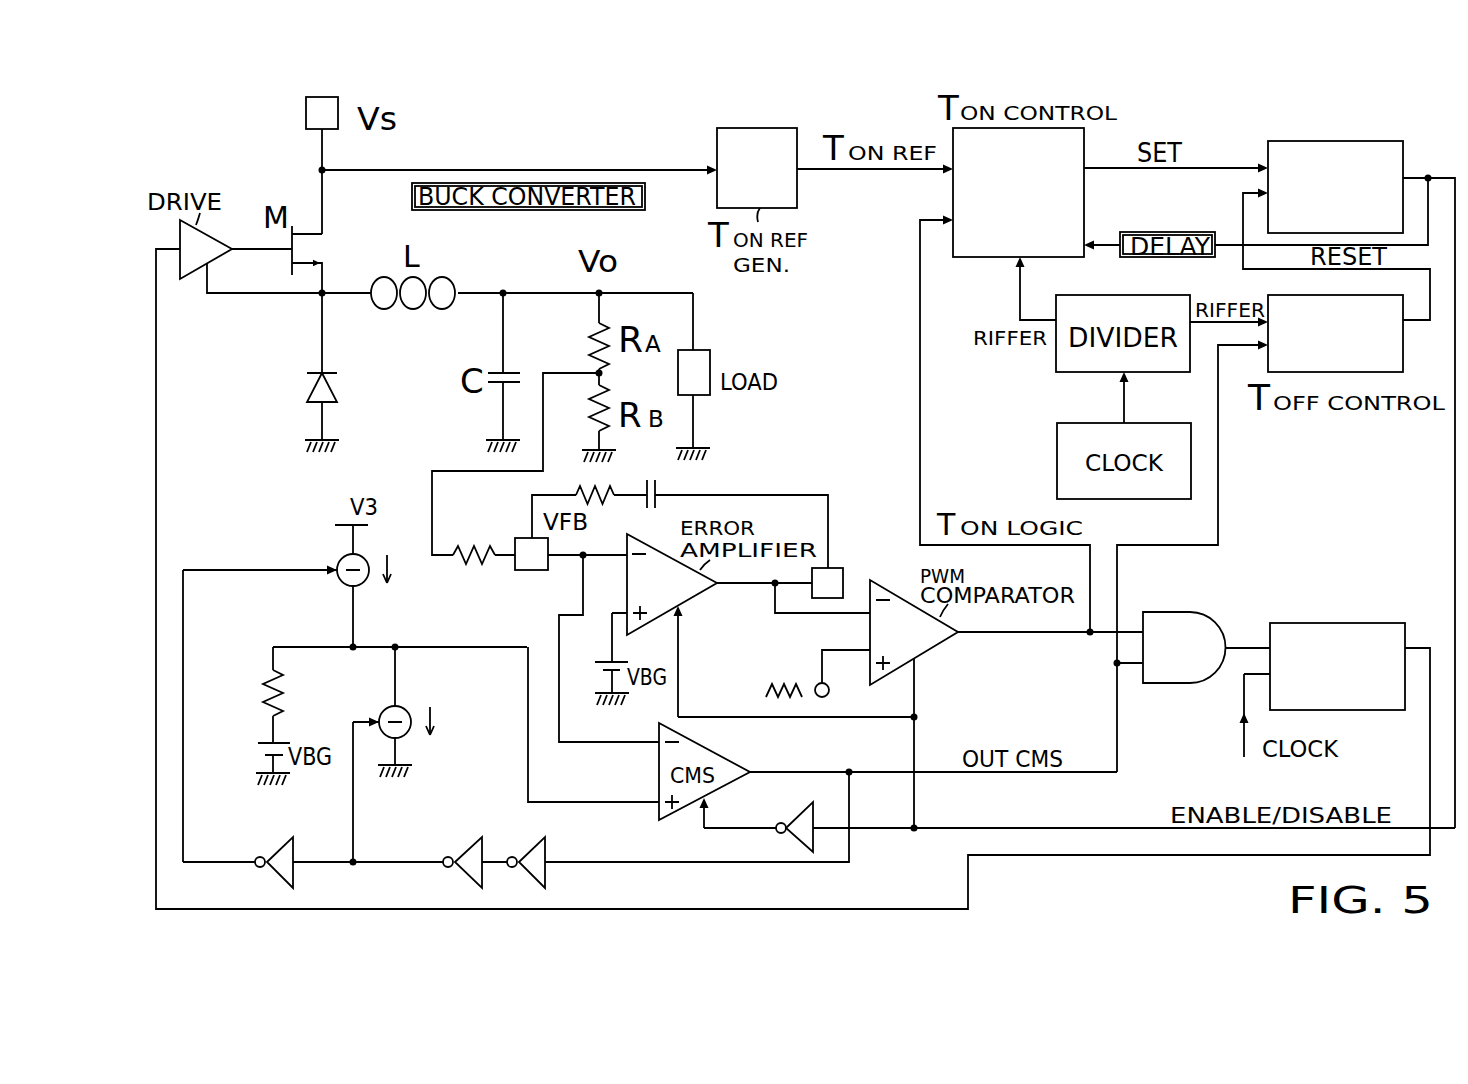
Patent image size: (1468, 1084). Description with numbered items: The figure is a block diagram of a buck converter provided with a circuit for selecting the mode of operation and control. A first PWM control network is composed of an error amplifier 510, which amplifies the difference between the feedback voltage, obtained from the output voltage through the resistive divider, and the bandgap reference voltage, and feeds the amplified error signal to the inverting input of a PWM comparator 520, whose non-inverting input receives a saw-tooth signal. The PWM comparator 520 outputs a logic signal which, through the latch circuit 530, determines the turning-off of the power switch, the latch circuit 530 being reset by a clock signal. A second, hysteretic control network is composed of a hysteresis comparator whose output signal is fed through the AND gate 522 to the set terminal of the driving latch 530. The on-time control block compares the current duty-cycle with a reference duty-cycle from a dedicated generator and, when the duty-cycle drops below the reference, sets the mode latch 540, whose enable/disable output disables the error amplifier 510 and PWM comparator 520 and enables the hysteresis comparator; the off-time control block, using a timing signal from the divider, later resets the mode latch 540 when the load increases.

The error amplifier 510 is at (675, 595).
The PWM comparator 520 is at (925, 643).
The AND gate 522 is at (1197, 663).
The latch circuit 530 is at (1350, 700).
The mode latch 540 is at (1357, 226).